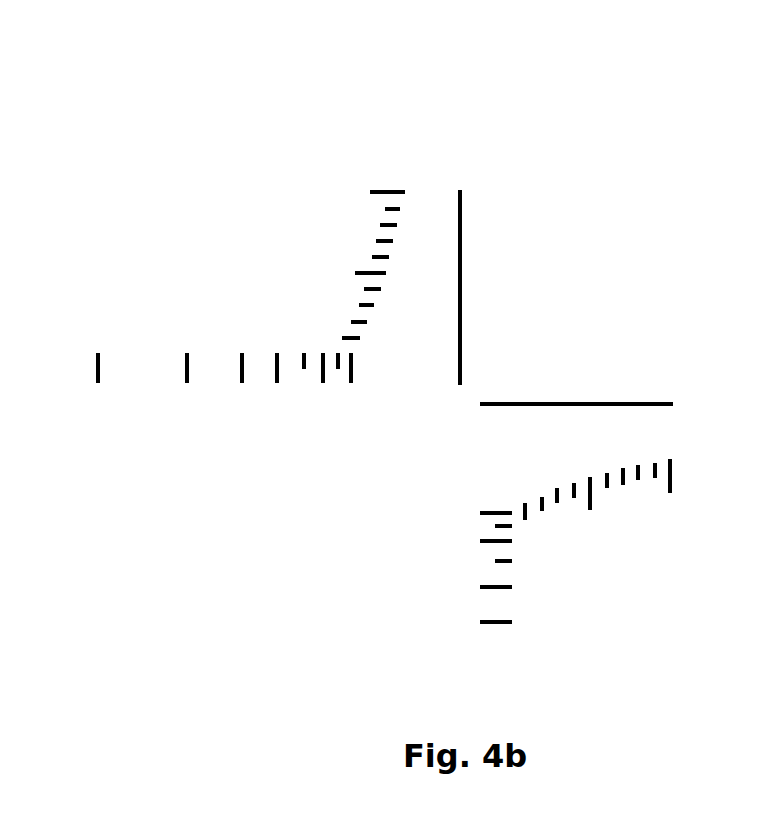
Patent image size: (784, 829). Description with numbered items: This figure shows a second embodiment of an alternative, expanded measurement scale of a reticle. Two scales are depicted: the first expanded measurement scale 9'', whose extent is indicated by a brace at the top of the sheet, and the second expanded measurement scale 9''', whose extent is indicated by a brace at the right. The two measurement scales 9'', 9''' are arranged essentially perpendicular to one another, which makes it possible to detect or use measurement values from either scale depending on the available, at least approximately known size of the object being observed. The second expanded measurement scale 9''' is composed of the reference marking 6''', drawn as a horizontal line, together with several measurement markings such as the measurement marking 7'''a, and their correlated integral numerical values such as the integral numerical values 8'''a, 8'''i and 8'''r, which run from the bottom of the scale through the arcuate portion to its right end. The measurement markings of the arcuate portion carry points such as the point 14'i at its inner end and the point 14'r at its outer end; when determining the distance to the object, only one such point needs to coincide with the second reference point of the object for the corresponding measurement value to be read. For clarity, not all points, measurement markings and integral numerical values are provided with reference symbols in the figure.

The expanded measurement scale 9'' is at (244, 226).
The reference marking 6''' is at (576, 350).
The point 14'i is at (479, 477).
The point 14'r is at (712, 451).
The integral numerical value 8'''i is at (593, 535).
The integral numerical value 8'''r is at (665, 552).
The integral numerical value 8'''a is at (380, 568).
The measurement marking 7'''a is at (542, 650).
The expanded measurement scale 9''' is at (733, 555).